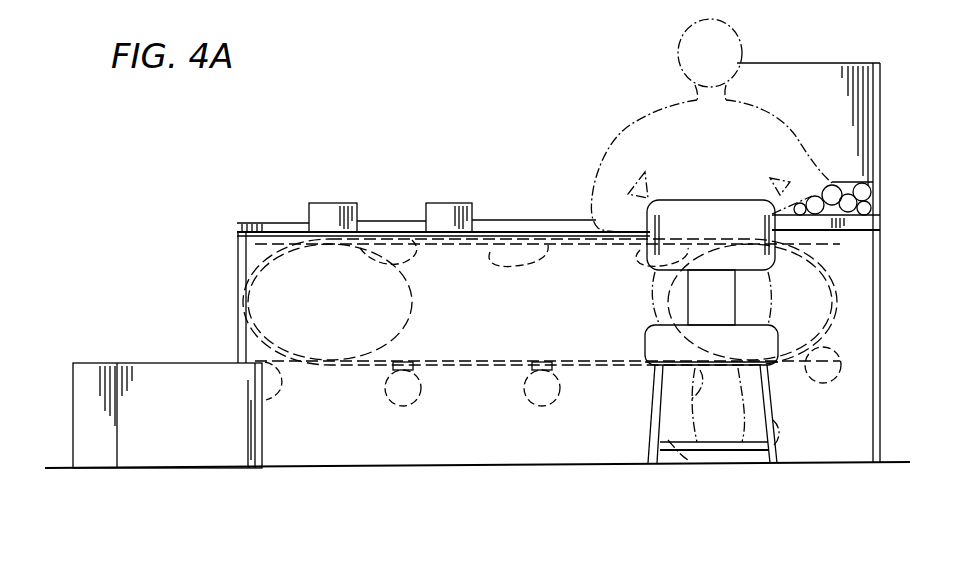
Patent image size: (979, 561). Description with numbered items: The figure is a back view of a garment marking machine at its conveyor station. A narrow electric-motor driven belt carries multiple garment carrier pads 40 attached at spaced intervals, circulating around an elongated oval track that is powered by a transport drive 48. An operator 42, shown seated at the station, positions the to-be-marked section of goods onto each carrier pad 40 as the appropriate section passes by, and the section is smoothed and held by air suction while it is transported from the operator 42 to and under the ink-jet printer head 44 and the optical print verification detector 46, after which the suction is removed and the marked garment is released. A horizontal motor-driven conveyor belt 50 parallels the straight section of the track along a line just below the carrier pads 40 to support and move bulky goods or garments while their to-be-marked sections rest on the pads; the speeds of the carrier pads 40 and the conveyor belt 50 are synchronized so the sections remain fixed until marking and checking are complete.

The garment carrier pad 40 is at (528, 397).
The operator 42 is at (795, 135).
The ink-jet printer head 44 is at (445, 207).
The optical print verification detector 46 is at (328, 207).
The transport drive 48 is at (838, 321).
The conveyor belt 50 is at (488, 360).